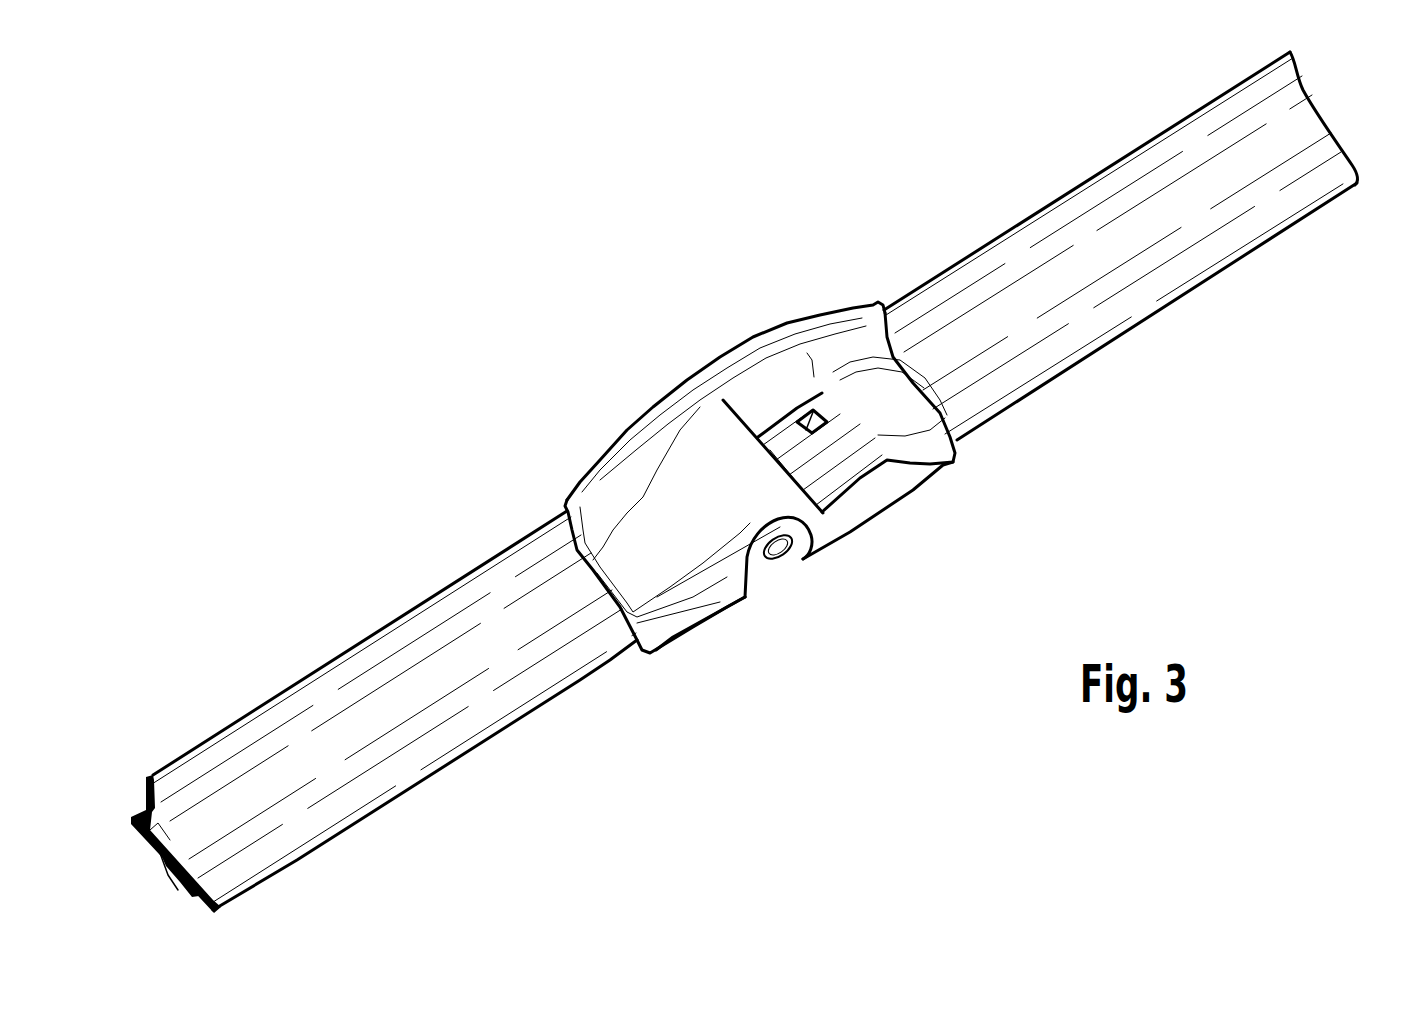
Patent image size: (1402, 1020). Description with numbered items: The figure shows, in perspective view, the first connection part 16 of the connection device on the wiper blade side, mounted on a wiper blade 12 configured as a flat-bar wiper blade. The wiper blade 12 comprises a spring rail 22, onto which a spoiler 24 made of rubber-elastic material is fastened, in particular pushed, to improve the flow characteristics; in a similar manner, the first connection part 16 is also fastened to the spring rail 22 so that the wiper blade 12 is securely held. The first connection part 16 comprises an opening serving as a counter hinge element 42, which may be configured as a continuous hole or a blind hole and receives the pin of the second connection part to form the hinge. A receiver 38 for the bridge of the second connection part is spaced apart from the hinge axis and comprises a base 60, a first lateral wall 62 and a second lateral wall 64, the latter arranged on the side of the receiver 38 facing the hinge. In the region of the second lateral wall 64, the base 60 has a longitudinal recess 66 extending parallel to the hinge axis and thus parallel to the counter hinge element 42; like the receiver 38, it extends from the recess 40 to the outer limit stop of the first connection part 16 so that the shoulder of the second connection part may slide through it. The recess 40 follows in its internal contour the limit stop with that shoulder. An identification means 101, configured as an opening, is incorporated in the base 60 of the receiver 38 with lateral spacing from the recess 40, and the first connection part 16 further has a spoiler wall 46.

The wiper blade 12 is at (1091, 145).
The spoiler 24 is at (1280, 103).
The spring rail 22 is at (180, 888).
The spoiler wall 46 is at (650, 427).
The counter hinge element 42 is at (779, 552).
The first connection part 16 is at (804, 300).
The recess 40 is at (766, 380).
The identification means 101 is at (811, 418).
The first lateral wall 62 is at (878, 446).
The base 60 is at (855, 458).
The receiver 38 is at (883, 518).
The second lateral wall 64 is at (846, 511).
The longitudinal recess 66 is at (882, 516).